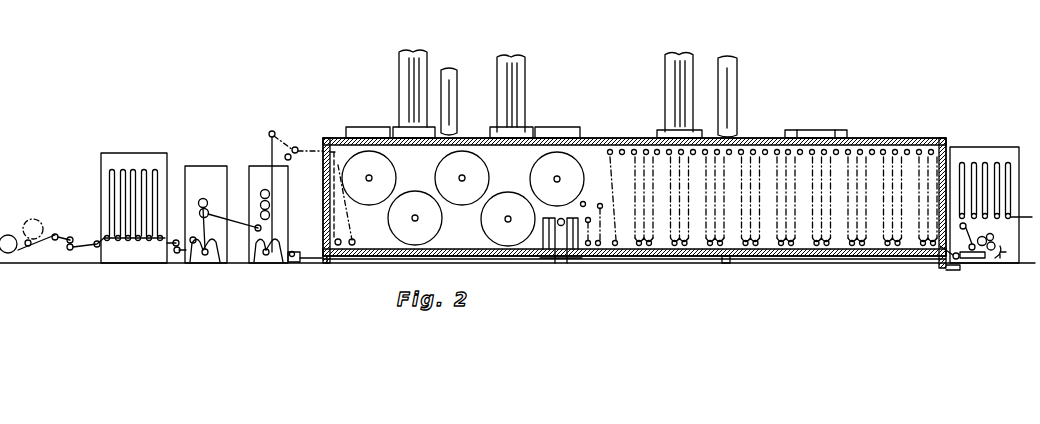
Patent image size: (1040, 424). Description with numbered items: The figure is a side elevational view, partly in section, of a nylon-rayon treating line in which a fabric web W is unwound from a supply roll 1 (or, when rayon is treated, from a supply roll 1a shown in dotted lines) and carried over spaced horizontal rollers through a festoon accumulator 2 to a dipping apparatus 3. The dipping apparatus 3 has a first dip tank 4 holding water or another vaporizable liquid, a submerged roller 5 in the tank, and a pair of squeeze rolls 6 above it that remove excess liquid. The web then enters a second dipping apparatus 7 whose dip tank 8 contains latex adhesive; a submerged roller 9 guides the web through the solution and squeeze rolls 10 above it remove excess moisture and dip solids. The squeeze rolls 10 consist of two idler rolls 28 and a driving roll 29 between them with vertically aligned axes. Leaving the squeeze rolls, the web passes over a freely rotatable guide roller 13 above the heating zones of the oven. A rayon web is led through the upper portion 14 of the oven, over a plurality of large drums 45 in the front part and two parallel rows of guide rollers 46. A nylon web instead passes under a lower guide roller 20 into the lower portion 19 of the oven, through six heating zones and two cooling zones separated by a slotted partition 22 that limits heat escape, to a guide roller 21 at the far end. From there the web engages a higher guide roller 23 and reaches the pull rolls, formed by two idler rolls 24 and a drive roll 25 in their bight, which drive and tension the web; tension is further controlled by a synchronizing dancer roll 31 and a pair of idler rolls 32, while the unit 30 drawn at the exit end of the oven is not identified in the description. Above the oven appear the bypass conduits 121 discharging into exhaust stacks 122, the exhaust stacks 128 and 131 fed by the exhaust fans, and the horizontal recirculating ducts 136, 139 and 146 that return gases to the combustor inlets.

The supply roll 1 is at (7, 234).
The rayon supply roll 1a is at (36, 218).
The fabric web W is at (63, 233).
The festoon accumulator 2 is at (116, 152).
The dipping apparatus 3 is at (200, 165).
The first dip tank 4 is at (194, 263).
The submerged roller 5 is at (221, 263).
The squeeze rolls 6 is at (205, 198).
The second dipping apparatus 7 is at (262, 161).
The second dip tank 8 is at (257, 263).
The submerged roller 9 is at (283, 263).
The squeeze rolls 10 is at (258, 185).
The guide roller 13 is at (272, 130).
The upper portion of oven 14 is at (319, 164).
The lower portion of oven 19 is at (330, 263).
The lower guide roller 20 is at (297, 263).
The guide roller 21 is at (954, 272).
The partition 22 is at (728, 263).
The guide roller 23 is at (985, 265).
The idler rolls 24 is at (975, 240).
The drive roll 25 is at (1000, 259).
The idler rolls 28 is at (270, 215).
The driving roll 29 is at (263, 200).
The cooling unit 30 is at (985, 146).
The synchronizing dancer roll 31 is at (561, 218).
The idler rolls 32 is at (558, 263).
The large drums 45 is at (410, 195).
The guide rollers 46 is at (905, 150).
The bypass conduit 121 is at (395, 134).
The exhaust stack 122 is at (400, 60).
The exhaust stack 128 is at (456, 75).
The exhaust stack 131 is at (735, 99).
The horizontal recirculating duct 136 is at (360, 126).
The horizontal recirculating duct 139 is at (555, 127).
The horizontal recirculating duct 146 is at (820, 128).